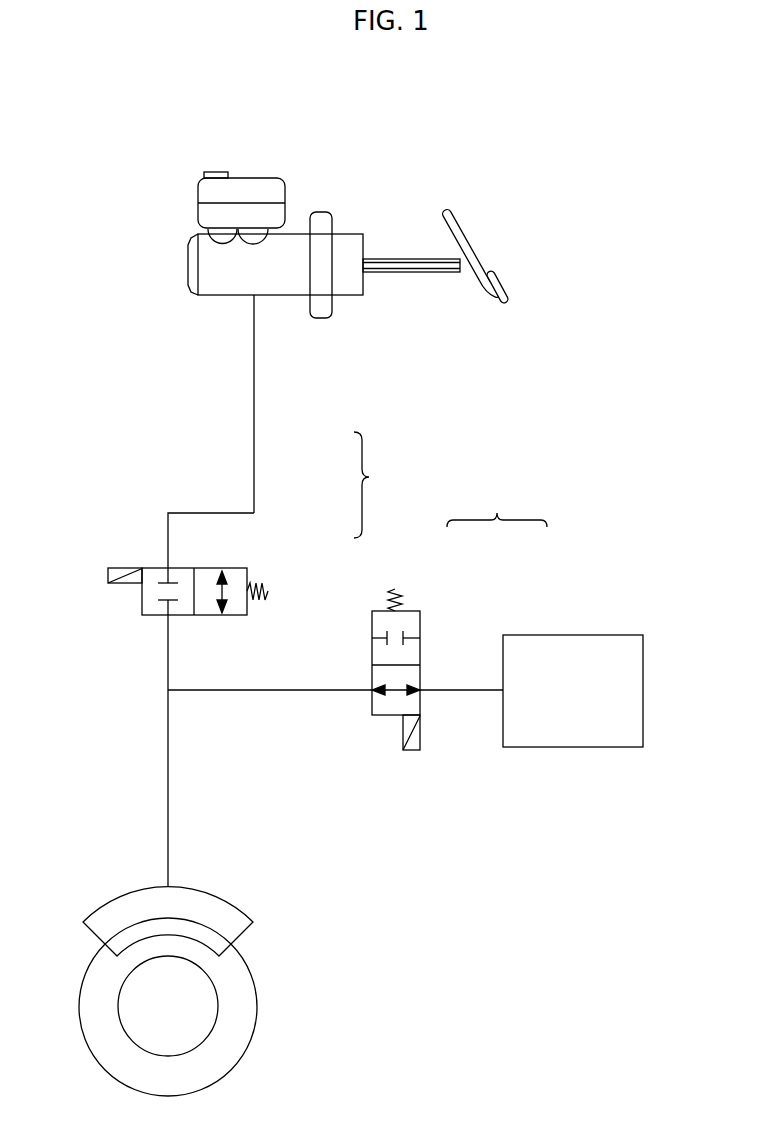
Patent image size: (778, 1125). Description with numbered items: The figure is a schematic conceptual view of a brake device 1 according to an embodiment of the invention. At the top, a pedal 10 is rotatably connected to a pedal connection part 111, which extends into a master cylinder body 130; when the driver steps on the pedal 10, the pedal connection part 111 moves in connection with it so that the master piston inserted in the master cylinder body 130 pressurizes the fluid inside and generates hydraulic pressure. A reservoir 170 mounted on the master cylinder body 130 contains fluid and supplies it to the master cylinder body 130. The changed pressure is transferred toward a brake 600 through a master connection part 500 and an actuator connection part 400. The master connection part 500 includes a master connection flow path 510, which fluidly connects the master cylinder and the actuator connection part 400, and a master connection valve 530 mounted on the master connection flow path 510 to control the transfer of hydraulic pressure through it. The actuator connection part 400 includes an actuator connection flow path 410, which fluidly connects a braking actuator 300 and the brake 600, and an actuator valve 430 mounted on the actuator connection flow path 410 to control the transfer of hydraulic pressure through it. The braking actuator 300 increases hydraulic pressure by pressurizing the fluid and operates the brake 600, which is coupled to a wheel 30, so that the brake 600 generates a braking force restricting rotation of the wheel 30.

The brake device 1 is at (660, 88).
The pedal 10 is at (497, 230).
The wheel 30 is at (238, 1007).
The pedal connection part 111 is at (408, 262).
The master cylinder body 130 is at (222, 280).
The reservoir 170 is at (268, 187).
The braking actuator 300 is at (587, 748).
The actuator connection part 400 is at (497, 508).
The actuator connection flow path 410 is at (457, 688).
The actuator valve 430 is at (412, 610).
The master connection part 500 is at (384, 485).
The master connection flow path 510 is at (255, 434).
The master connection valve 530 is at (248, 573).
The brake 600 is at (217, 912).